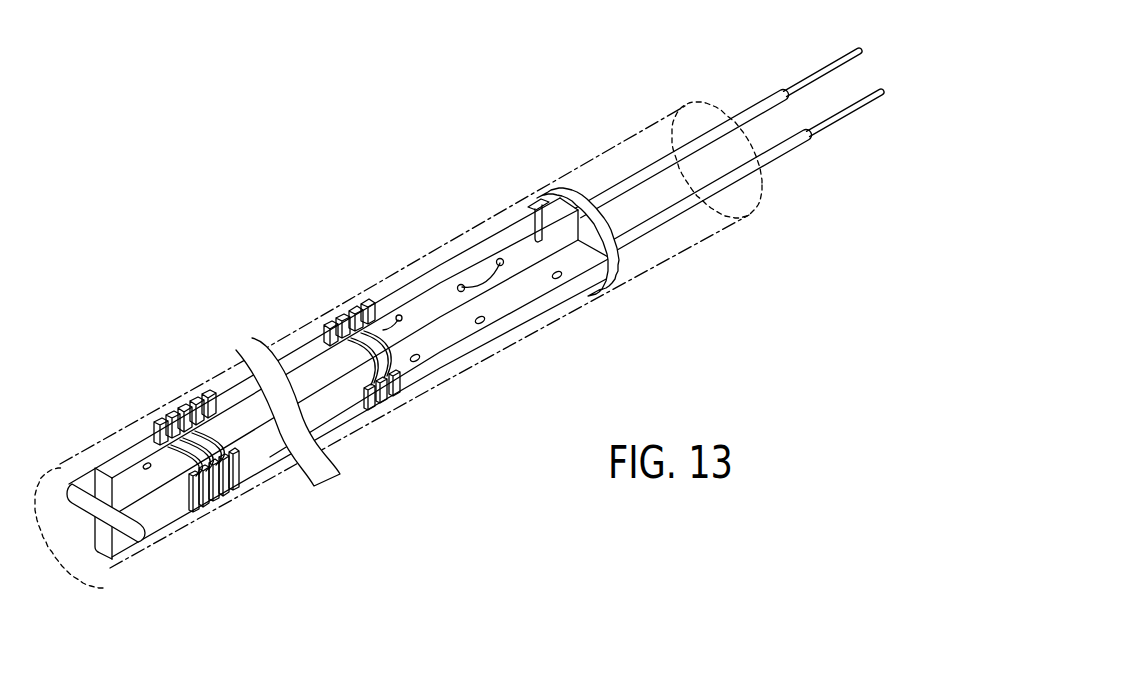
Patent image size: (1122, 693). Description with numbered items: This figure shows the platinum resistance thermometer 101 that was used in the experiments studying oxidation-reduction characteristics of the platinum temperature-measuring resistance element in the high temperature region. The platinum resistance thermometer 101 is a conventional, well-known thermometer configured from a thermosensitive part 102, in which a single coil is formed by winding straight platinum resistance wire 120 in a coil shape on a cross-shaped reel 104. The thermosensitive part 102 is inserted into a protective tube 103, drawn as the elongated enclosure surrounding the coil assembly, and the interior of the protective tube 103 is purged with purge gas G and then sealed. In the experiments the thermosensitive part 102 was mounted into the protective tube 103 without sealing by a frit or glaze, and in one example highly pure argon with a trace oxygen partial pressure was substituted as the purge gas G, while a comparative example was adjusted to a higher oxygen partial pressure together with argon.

The platinum resistance thermometer 101 is at (355, 264).
The thermosensitive part 102 is at (184, 406).
The protective tube 103 is at (434, 392).
The cross-shaped reel 104 is at (102, 548).
The platinum resistance wire 120 is at (180, 480).
The purge gas G is at (281, 478).